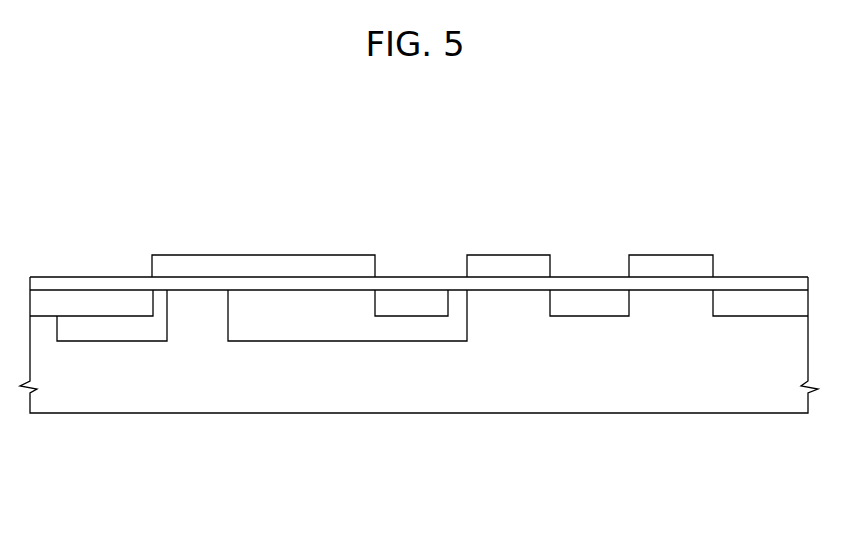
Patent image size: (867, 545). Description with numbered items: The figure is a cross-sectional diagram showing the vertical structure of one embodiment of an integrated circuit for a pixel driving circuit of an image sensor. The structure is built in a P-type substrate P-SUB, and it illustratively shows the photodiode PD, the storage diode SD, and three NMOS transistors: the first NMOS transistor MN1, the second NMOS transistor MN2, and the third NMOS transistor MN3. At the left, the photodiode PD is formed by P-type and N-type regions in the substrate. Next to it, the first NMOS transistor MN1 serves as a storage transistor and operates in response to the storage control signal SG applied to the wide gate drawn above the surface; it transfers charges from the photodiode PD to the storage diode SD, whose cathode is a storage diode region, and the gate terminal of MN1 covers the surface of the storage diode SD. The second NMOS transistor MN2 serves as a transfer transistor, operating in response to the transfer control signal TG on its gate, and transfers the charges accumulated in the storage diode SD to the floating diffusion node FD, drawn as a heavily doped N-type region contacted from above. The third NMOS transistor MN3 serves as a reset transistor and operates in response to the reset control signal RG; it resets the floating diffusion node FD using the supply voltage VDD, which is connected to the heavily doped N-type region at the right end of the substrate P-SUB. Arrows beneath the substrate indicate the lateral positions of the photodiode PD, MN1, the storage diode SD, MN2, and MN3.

The P-type substrate P-SUB is at (419, 345).
The storage control signal SG is at (242, 255).
The transfer control signal TG is at (508, 255).
The reset control signal RG is at (670, 255).
The floating diffusion node FD is at (589, 290).
The supply voltage VDD is at (762, 290).
The photodiode PD is at (139, 413).
The first NMOS transistor MN1 is at (279, 413).
The storage diode SD is at (419, 413).
The second NMOS transistor MN2 is at (508, 413).
The third NMOS transistor MN3 is at (671, 413).